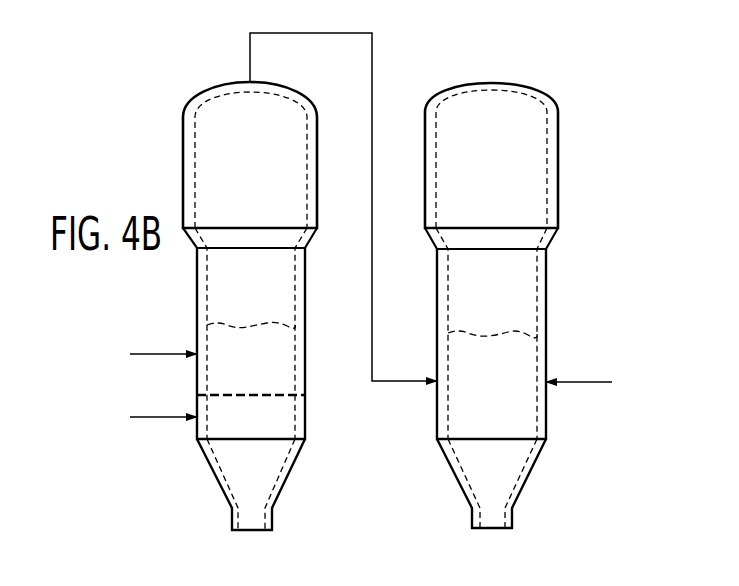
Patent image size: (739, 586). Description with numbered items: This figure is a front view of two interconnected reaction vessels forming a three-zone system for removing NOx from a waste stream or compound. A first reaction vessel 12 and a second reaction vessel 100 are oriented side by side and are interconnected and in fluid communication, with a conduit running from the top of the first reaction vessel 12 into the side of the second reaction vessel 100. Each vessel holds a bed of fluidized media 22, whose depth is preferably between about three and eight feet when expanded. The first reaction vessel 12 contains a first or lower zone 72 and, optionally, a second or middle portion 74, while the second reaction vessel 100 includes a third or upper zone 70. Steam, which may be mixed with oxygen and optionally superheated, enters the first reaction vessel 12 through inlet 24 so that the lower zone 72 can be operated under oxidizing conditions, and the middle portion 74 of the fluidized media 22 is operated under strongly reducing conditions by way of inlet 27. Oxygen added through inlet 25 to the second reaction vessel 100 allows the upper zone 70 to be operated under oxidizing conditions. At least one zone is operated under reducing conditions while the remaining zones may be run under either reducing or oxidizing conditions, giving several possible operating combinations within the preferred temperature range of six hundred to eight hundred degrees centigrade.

The reaction vessel 12 is at (287, 84).
The second reaction vessel 100 is at (497, 83).
The fluidized media 22 is at (267, 474).
The inlet 24 is at (168, 419).
The inlet 25 is at (592, 382).
The inlet 27 is at (167, 353).
The upper zone 70 is at (492, 417).
The lower zone 72 is at (267, 422).
The middle portion 74 is at (267, 352).